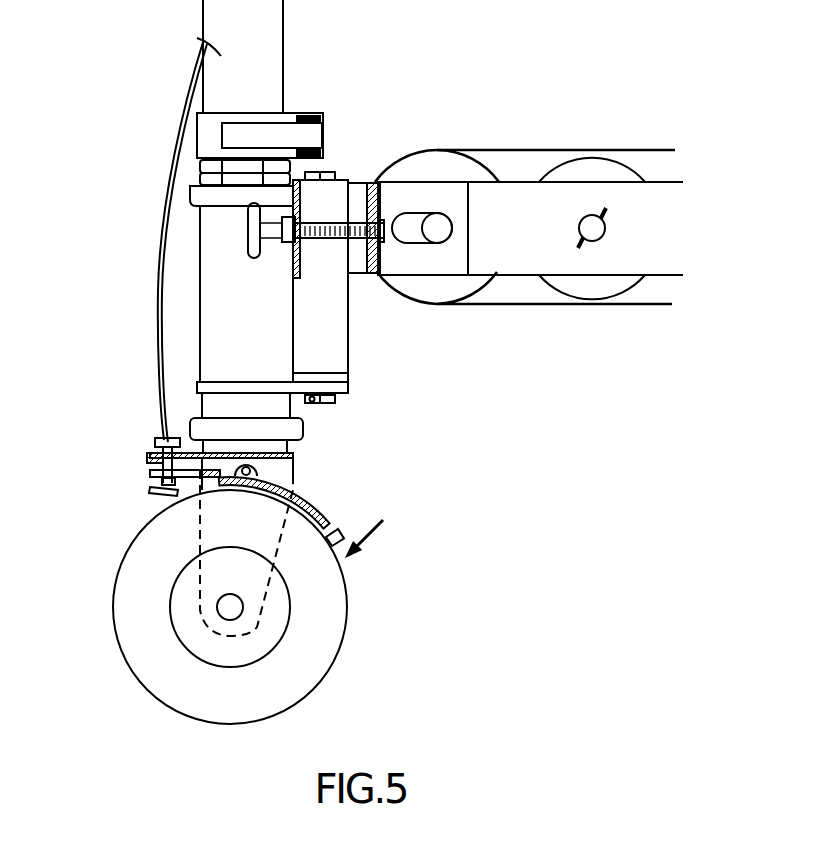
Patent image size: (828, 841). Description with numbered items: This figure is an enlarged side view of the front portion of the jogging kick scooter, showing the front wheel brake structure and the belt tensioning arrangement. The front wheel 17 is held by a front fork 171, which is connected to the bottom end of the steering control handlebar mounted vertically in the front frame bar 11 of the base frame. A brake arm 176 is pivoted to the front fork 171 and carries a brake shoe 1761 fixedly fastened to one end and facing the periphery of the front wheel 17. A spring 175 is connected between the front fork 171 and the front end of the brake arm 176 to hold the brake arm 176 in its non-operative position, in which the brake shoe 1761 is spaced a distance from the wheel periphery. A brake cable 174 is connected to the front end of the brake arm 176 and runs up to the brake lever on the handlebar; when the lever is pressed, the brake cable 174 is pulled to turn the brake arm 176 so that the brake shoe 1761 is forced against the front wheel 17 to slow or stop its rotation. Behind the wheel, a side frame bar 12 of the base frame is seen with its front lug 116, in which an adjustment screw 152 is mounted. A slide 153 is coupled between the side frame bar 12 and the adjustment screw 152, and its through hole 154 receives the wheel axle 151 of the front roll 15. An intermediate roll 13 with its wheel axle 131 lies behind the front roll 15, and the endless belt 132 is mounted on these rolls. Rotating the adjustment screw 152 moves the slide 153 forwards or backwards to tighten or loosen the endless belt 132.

The front frame bar 11 is at (335, 198).
The side frame bar 12 is at (518, 202).
The intermediate roll 13 is at (598, 165).
The front roll 15 is at (422, 165).
The front wheel 17 is at (140, 552).
The front lug 116 is at (316, 175).
The wheel axle 131 is at (600, 243).
The endless belt 132 is at (648, 148).
The wheel axle 151 is at (440, 243).
The adjustment screw 152 is at (247, 222).
The slide 153 is at (447, 195).
The through hole 154 is at (412, 243).
The front fork 171 is at (287, 470).
The brake cable 174 is at (158, 272).
The spring 175 is at (150, 473).
The brake arm 176 is at (160, 438).
The brake shoe 1761 is at (318, 540).